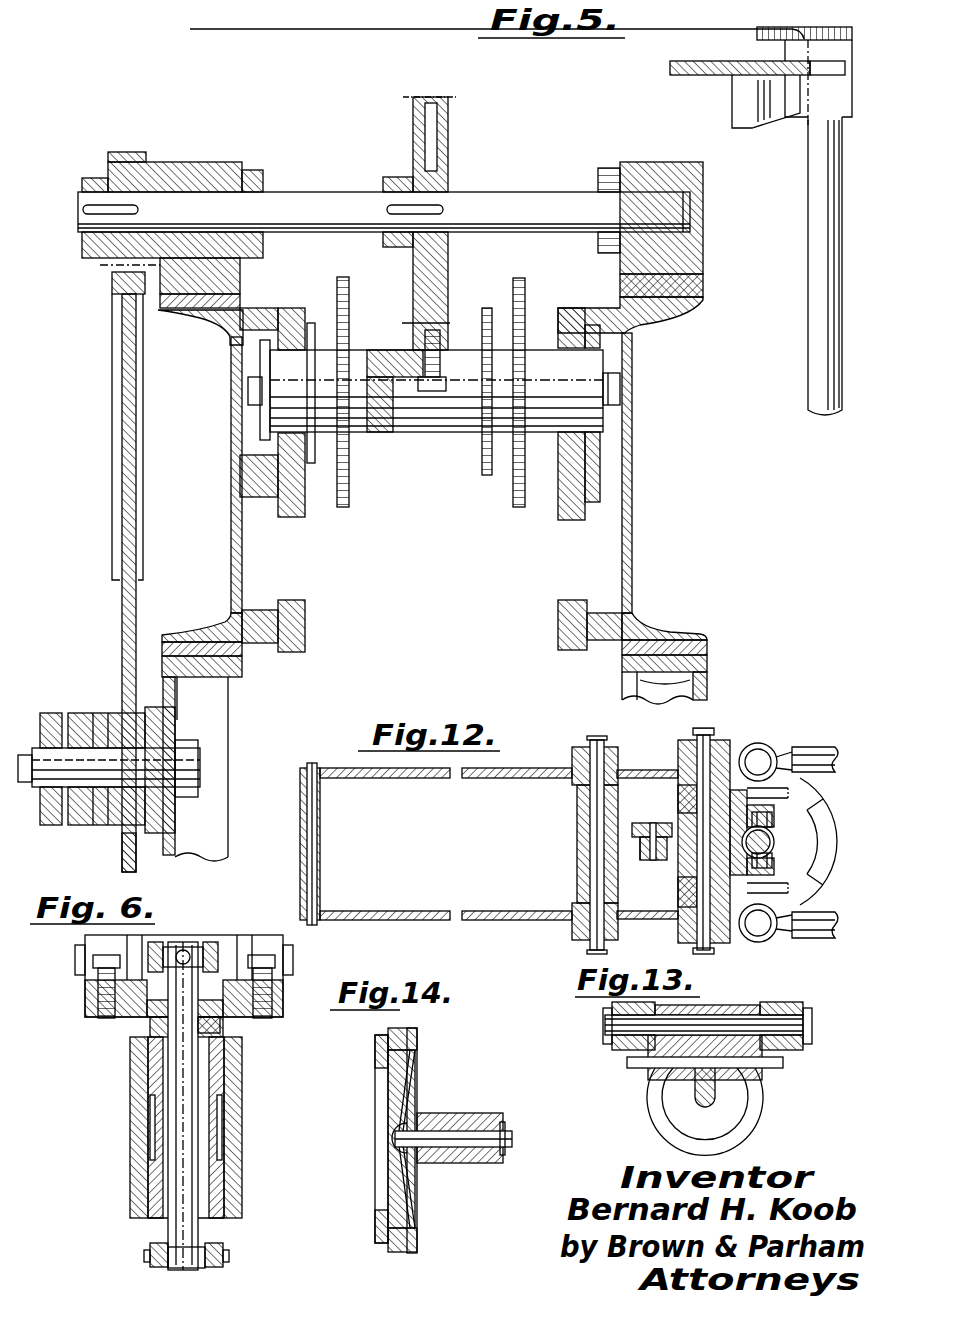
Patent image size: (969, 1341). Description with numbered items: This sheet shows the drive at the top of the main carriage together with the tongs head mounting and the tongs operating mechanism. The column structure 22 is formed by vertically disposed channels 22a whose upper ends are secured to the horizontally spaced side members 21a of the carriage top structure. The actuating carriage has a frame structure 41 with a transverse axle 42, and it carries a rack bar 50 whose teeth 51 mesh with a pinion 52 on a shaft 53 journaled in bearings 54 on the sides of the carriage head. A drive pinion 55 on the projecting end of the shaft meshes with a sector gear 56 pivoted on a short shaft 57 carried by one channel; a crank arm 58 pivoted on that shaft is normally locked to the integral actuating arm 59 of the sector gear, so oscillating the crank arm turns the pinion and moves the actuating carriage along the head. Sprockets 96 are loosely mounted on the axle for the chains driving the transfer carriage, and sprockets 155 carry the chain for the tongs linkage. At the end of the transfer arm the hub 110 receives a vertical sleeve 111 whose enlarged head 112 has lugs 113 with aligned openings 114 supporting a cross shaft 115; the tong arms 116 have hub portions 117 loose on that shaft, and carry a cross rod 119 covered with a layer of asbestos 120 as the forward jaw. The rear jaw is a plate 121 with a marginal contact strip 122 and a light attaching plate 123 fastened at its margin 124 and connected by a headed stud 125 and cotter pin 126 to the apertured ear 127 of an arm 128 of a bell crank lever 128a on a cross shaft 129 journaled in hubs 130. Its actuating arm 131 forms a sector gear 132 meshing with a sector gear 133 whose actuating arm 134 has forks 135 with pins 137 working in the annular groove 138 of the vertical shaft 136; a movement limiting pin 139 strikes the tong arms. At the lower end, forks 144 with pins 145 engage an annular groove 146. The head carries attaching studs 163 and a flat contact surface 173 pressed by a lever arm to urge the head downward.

In FIG. 5, the side members 21a is at (243, 572).
In FIG. 5, the column structure 22 is at (712, 676).
In FIG. 5, the channels 22a is at (177, 838).
In FIG. 5, the frame structure 41 is at (390, 347).
In FIG. 5, the axle 42 is at (614, 382).
In FIG. 5, the rack bar 50 is at (448, 335).
In FIG. 5, the teeth 51 is at (403, 318).
In FIG. 5, the pinion 52 is at (440, 148).
In FIG. 5, the shaft 53 is at (502, 203).
In FIG. 5, the bearings 54 is at (210, 173).
In FIG. 5, the drive pinion 55 is at (120, 250).
In FIG. 5, the sector gear 56 is at (125, 604).
In FIG. 5, the shaft 57 is at (120, 760).
In FIG. 5, the crank arm 58 is at (103, 828).
In FIG. 5, the actuating arm 59 is at (141, 857).
In FIG. 5, the sprockets 96 is at (339, 281).
In FIG. 5, the sprockets 155 is at (484, 476).
In FIG. 6, the hub 110 is at (234, 1130).
In FIG. 6, the sleeve 111 is at (218, 1086).
In FIG. 12, the head 112 is at (812, 832).
In FIG. 6, the head 112 is at (127, 1012).
In FIG. 12, the lugs 113 is at (680, 782).
In FIG. 12, the openings 114 is at (697, 797).
In FIG. 12, the cross shaft 115 is at (700, 762).
In FIG. 12, the tong arms 116 is at (427, 782).
In FIG. 12, the hub portions 117 is at (730, 752).
In FIG. 12, the cross rod 119 is at (313, 821).
In FIG. 12, the layer of asbestos 120 is at (322, 873).
In FIG. 14, the plate 121 is at (387, 1170).
In FIG. 14, the contact strip 122 is at (375, 1055).
In FIG. 14, the attaching plate 123 is at (415, 1090).
In FIG. 14, the marginal attachment 124 is at (420, 1052).
In FIG. 14, the headed stud 125 is at (423, 1140).
In FIG. 14, the cotter pin 126 is at (506, 1116).
In FIG. 14, the apertured ear 127 is at (467, 1113).
In FIG. 13, the arm 128 is at (653, 1058).
In FIG. 12, the bell crank lever 128a is at (578, 873).
In FIG. 13, the bell crank lever 128a is at (697, 1007).
In FIG. 12, the cross shaft 129 is at (592, 808).
In FIG. 12, the hubs 130 is at (572, 754).
In FIG. 13, the hubs 130 is at (623, 1052).
In FIG. 12, the actuating arm 131 is at (644, 860).
In FIG. 12, the sector gear 132 is at (653, 827).
In FIG. 12, the sector gear 133 is at (655, 860).
In FIG. 12, the actuating arm 134 is at (718, 838).
In FIG. 12, the forks 135 is at (775, 812).
In FIG. 6, the forks 135 is at (160, 924).
In FIG. 6, the vertical shaft 136 is at (176, 1068).
In FIG. 12, the pins 137 is at (773, 821).
In FIG. 6, the pins 137 is at (184, 948).
In FIG. 6, the annular groove 138 is at (215, 1018).
In FIG. 13, the movement limiting pin 139 is at (772, 1069).
In FIG. 6, the forks 144 is at (222, 1252).
In FIG. 6, the pins 145 is at (152, 1240).
In FIG. 6, the annular groove 146 is at (188, 1243).
In FIG. 6, the attaching studs 163 is at (98, 990).
In FIG. 12, the contact surface 173 is at (833, 862).